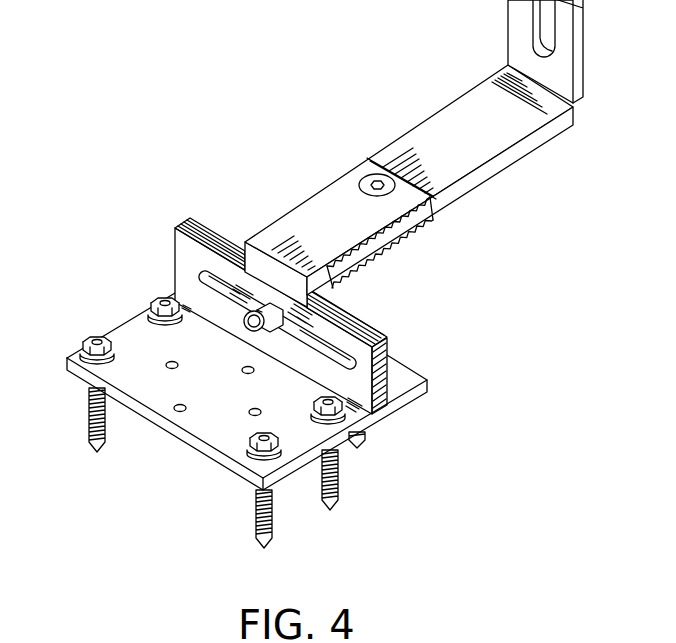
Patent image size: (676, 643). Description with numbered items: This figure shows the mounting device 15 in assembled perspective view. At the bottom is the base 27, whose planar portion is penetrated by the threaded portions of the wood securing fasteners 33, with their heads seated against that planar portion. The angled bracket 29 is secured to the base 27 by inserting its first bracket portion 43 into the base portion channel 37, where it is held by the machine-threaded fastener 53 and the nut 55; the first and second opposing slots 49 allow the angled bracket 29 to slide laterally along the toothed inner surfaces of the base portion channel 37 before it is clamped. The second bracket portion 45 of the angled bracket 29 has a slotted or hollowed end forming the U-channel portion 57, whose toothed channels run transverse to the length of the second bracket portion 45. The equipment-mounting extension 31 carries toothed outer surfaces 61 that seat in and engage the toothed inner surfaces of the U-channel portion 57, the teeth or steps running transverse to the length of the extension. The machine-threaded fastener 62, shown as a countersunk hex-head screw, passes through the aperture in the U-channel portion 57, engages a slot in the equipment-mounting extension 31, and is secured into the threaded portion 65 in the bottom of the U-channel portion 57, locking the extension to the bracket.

The mounting device 15 is at (266, 62).
The base 27 is at (124, 322).
The angled bracket 29 is at (314, 186).
The equipment-mounting extension 31 is at (512, 167).
The wood securing fasteners 33 is at (93, 335).
The base portion channel 37 is at (200, 224).
The first bracket portion 43 is at (330, 292).
The second bracket portion 45 is at (254, 238).
The first and second opposing slots 49 is at (325, 353).
The machine-threaded fastener 53 is at (242, 333).
The nut 55 is at (240, 316).
The U-channel portion 57 is at (392, 247).
The toothed outer surfaces 61 is at (373, 262).
The machine-threaded fastener 62 is at (378, 176).
The threaded portion 65 is at (424, 224).